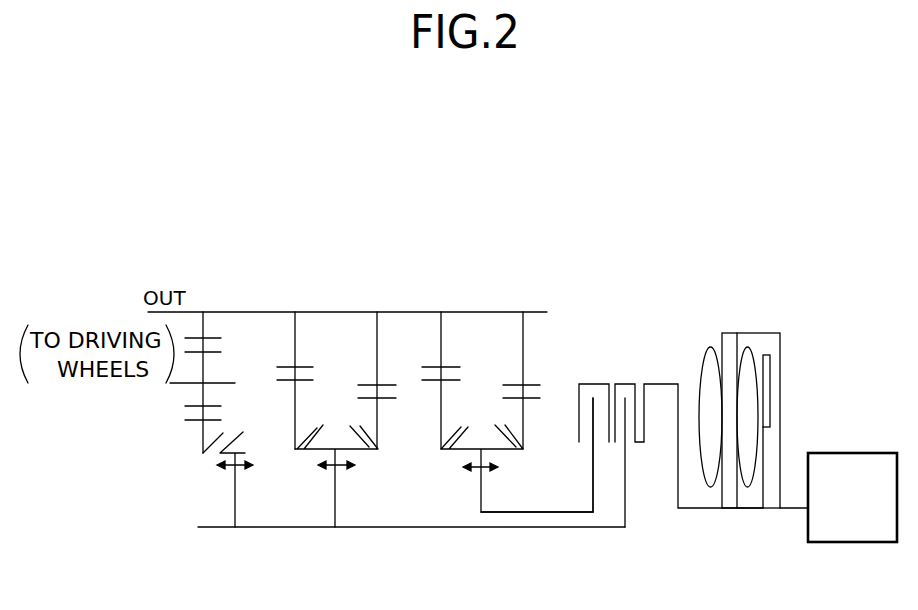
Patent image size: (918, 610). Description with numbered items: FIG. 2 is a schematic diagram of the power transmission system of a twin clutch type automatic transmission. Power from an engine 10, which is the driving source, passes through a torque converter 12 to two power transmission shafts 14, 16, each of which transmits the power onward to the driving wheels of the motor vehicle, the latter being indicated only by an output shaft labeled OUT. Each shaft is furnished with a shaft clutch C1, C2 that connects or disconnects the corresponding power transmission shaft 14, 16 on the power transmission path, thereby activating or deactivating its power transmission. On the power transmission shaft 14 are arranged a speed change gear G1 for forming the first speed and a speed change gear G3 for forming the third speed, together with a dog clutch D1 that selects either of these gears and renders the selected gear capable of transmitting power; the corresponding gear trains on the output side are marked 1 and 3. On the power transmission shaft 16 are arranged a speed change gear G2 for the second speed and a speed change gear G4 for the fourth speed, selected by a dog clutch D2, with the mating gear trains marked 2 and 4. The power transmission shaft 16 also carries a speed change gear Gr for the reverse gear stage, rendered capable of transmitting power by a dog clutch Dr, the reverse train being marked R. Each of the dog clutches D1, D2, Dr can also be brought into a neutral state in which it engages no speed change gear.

The engine 10 is at (827, 452).
The torque converter 12 is at (742, 330).
The power transmission shaft 14 is at (573, 512).
The power transmission shaft 16 is at (555, 528).
The shaft clutch C1 is at (592, 382).
The shaft clutch C2 is at (627, 382).
The speed change gear G1 is at (547, 343).
The speed change gear G2 is at (382, 378).
The speed change gear G3 is at (452, 350).
The speed change gear G4 is at (305, 360).
The speed change gear Gr is at (232, 377).
The dog clutch D1 is at (497, 442).
The dog clutch D2 is at (353, 445).
The dog clutch Dr is at (247, 445).
The first speed gear train 1 is at (533, 380).
The second speed gear train 2 is at (386, 380).
The third speed gear train 3 is at (432, 380).
The fourth speed gear train 4 is at (281, 380).
The reverse gear train R is at (214, 382).